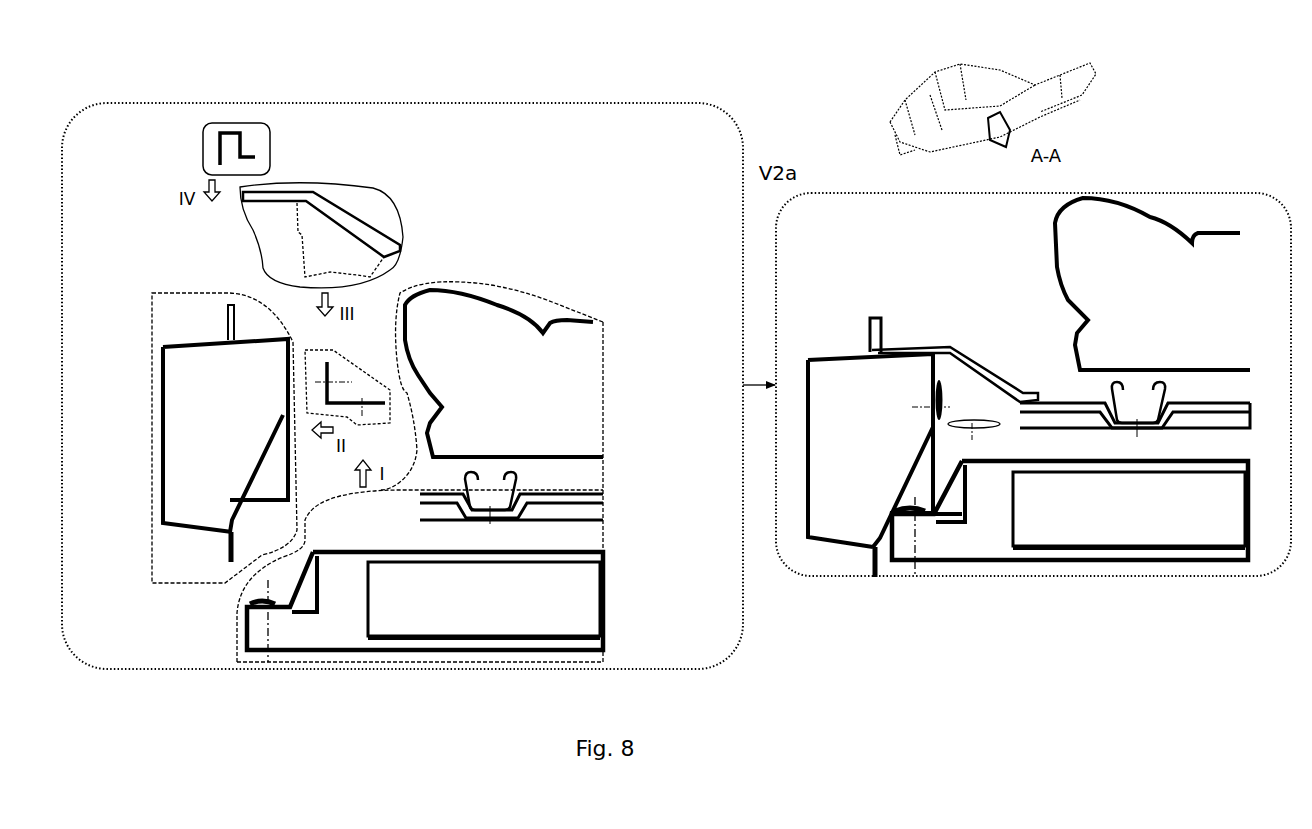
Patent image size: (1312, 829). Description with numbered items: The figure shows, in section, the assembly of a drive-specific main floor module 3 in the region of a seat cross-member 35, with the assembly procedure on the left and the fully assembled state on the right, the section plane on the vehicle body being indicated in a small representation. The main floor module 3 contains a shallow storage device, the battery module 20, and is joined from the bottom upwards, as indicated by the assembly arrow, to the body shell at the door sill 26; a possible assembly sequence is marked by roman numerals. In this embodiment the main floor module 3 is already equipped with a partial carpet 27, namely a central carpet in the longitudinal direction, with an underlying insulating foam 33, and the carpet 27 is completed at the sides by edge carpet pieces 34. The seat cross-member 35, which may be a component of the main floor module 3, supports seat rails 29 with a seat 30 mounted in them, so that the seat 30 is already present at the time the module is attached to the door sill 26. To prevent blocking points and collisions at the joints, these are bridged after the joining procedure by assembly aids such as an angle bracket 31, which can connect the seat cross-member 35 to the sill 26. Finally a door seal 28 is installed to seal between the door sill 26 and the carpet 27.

The main floor module 3 is at (548, 296).
The battery module 20 is at (747, 555).
The door sill 26 is at (155, 292).
The carpet 27 is at (607, 493).
The door seal 28 is at (200, 152).
The seat rails 29 is at (815, 446).
The seat 30 is at (827, 327).
The angle bracket 31 is at (362, 358).
The insulating foam 33 is at (607, 502).
The edge carpet pieces 34 is at (391, 196).
The seat cross-member 35 is at (607, 519).